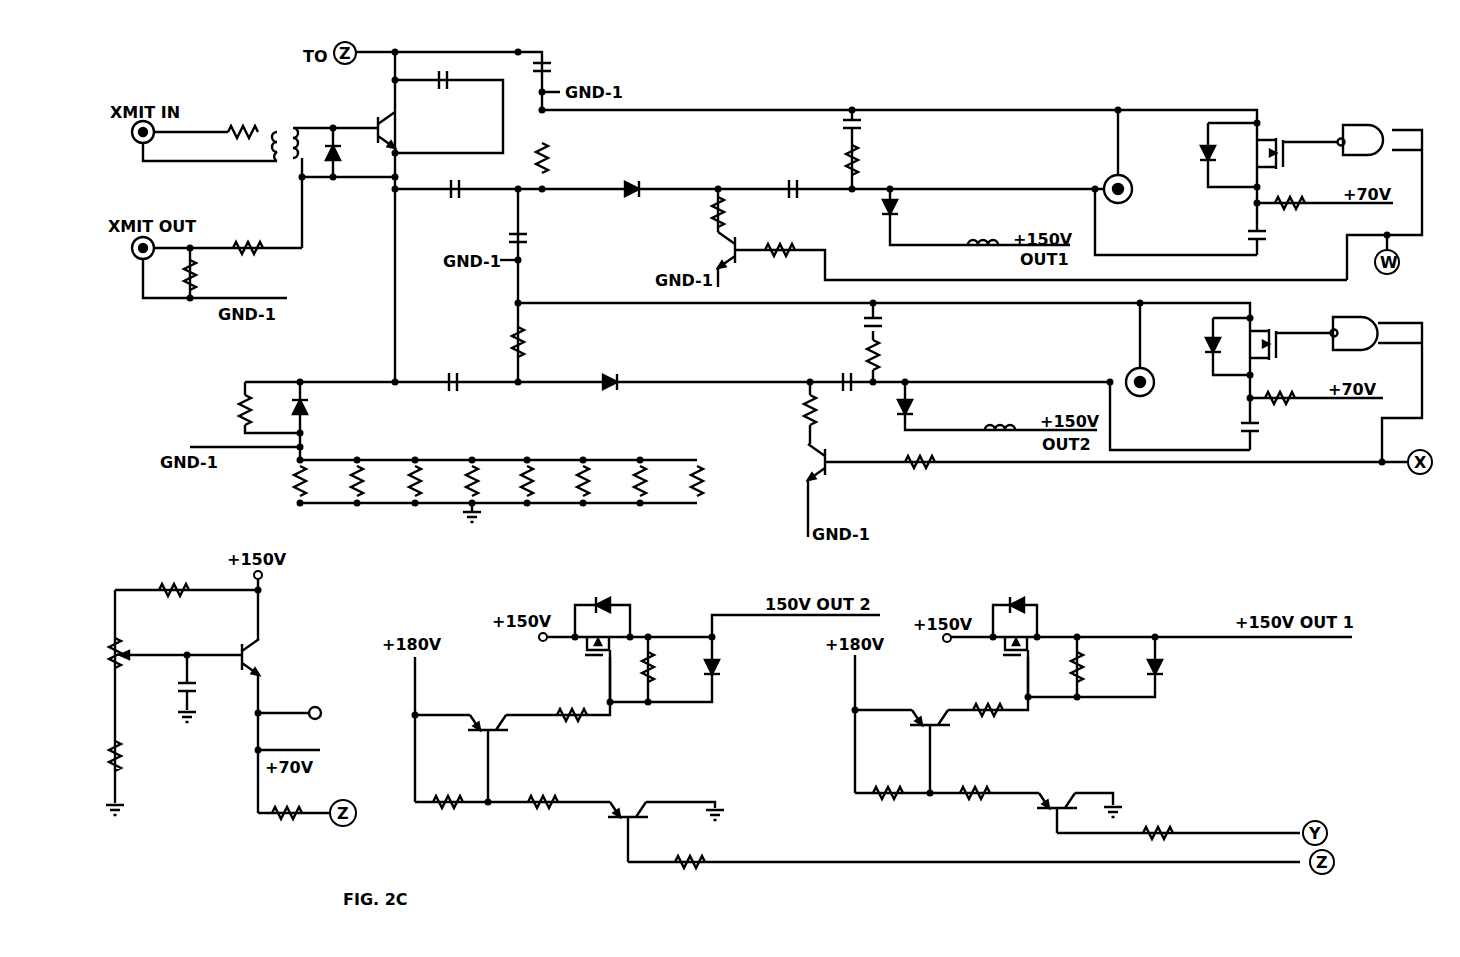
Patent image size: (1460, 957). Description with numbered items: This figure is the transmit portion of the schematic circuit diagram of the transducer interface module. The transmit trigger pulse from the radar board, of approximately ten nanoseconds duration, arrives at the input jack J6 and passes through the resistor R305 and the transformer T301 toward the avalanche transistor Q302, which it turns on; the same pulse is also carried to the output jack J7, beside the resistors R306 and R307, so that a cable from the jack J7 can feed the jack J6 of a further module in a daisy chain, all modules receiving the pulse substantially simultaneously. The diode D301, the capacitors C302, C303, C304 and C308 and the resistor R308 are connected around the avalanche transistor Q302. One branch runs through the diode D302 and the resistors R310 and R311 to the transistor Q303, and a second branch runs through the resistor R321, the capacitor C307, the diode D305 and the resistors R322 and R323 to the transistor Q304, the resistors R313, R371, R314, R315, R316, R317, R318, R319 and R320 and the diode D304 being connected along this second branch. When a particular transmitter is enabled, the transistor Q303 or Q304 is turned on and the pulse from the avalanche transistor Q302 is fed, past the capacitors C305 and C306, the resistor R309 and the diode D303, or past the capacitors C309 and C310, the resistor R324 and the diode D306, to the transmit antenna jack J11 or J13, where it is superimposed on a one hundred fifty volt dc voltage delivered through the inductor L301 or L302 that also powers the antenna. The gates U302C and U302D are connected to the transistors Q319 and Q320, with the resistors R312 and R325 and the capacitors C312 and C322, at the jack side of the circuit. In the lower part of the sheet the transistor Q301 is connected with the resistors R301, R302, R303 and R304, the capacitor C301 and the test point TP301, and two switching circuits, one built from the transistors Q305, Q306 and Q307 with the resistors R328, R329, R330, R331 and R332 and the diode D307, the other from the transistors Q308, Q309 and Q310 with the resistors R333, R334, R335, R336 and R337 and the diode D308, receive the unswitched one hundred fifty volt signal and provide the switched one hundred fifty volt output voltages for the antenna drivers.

The input jack J6 is at (200, 122).
The output jack J7 is at (213, 247).
The resistor 27 R305 is at (248, 134).
The resistor 1K R306 is at (256, 249).
The resistor 51 R307 is at (202, 273).
The transformer T301 is at (316, 188).
The diode D301 is at (336, 164).
The avalanche transistor Q302 is at (412, 130).
The capacitor 2PF C302 is at (449, 107).
The capacitor 220PF C303 is at (465, 194).
The capacitor 220PF C304 is at (577, 63).
The resistor 1.5K R308 is at (568, 153).
The capacitor 220PF C308 is at (543, 242).
The diode D302 is at (635, 173).
The resistor 20K R310 is at (744, 209).
The transistor Q303 is at (695, 258).
The resistor 20K R311 is at (1041, 252).
The capacitor 220PF C305 is at (786, 170).
The capacitor 0.01 C306 is at (875, 102).
The resistor 51 R309 is at (878, 162).
The diode D303 is at (976, 216).
The inductor 1mH L301 is at (987, 243).
The transmit antenna jack J11 is at (1118, 163).
The NAND gate U302C is at (1311, 190).
The MOSFET Q319 is at (1301, 153).
The resistor 100K R312 is at (1324, 204).
The capacitor 0.01 C312 is at (1280, 250).
The resistor 1.5K R321 is at (543, 343).
The capacitor 220PF C307 is at (446, 362).
The diode D305 is at (615, 362).
The resistor 5K R313 is at (243, 408).
The diode D304 is at (328, 421).
The resistor 51 R371 is at (264, 484).
The resistor 51 R314 is at (348, 460).
The resistor 51 R315 is at (416, 504).
The resistor 51 R316 is at (463, 467).
The resistor 51 R317 is at (528, 504).
The resistor 51 R318 is at (581, 459).
The resistor 51 R319 is at (640, 504).
The resistor 51 R320 is at (688, 454).
The resistor 20K R322 is at (779, 412).
The transistor Q304 is at (781, 490).
The resistor 20K R323 is at (1116, 463).
The capacitor 220PF C309 is at (846, 382).
The capacitor 0.01 C310 is at (902, 324).
The resistor R324 is at (900, 363).
The diode D306 is at (997, 405).
The inductor 1mH L302 is at (1004, 428).
The transmit antenna jack J13 is at (1125, 348).
The NAND gate U302D is at (1313, 378).
The MOSFET Q320 is at (1294, 344).
The resistor 100K R325 is at (1315, 401).
The capacitor 0.01 C322 is at (1255, 437).
The resistor 249K R301 is at (198, 594).
The potentiometer 100K R302 is at (175, 660).
The resistor 147K R303 is at (141, 767).
The capacitor 0.01 C301 is at (211, 688).
The transistor Q301 is at (277, 657).
The test point TP301 is at (314, 716).
The resistor 1K R304 is at (294, 818).
The transistor Q305 is at (484, 746).
The resistor 300K R329 is at (560, 701).
The resistor 10K R330 is at (453, 804).
The resistor 1M R331 is at (549, 804).
The transistor Q307 is at (660, 818).
The resistor 20K R332 is at (964, 864).
The MOSFET Q306 is at (621, 649).
The resistor 300K R328 is at (672, 670).
The diode D307 is at (745, 658).
The transistor Q308 is at (920, 740).
The resistor R334 is at (990, 686).
The resistor 10K R335 is at (894, 799).
The resistor 1M R336 is at (984, 799).
The transistor Q310 is at (1077, 801).
The resistor 20K R337 is at (1178, 833).
The MOSFET Q309 is at (1150, 647).
The resistor 300K R333 is at (1102, 667).
The diode D308 is at (1122, 666).